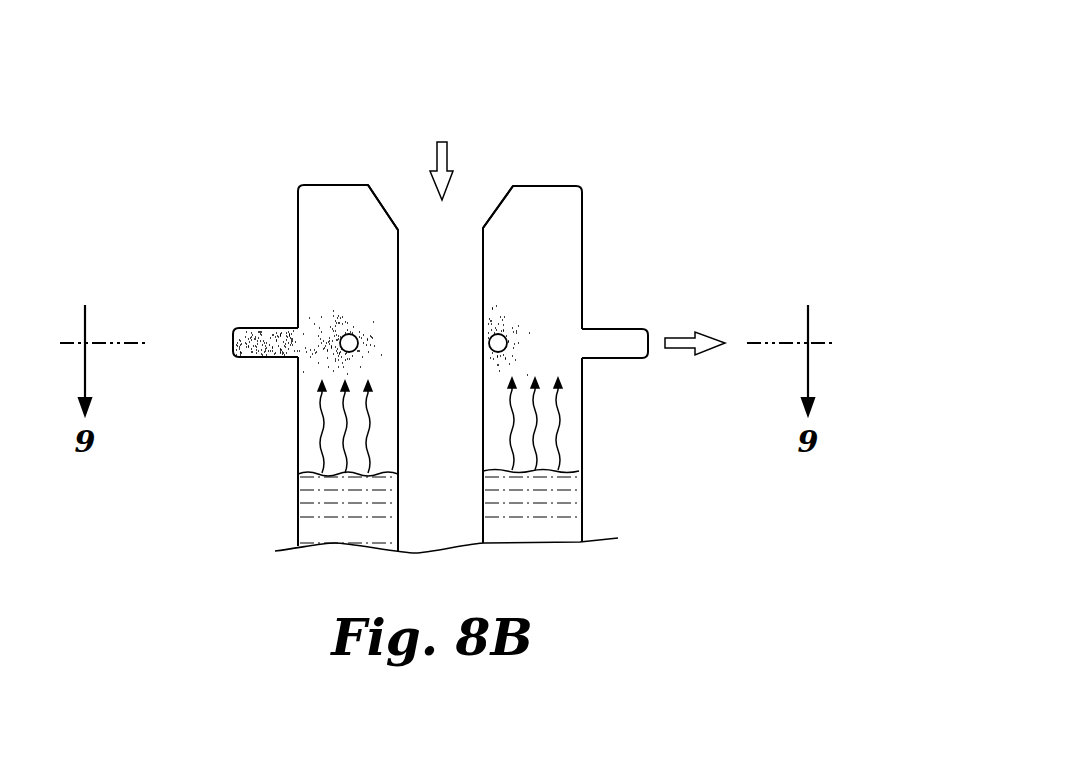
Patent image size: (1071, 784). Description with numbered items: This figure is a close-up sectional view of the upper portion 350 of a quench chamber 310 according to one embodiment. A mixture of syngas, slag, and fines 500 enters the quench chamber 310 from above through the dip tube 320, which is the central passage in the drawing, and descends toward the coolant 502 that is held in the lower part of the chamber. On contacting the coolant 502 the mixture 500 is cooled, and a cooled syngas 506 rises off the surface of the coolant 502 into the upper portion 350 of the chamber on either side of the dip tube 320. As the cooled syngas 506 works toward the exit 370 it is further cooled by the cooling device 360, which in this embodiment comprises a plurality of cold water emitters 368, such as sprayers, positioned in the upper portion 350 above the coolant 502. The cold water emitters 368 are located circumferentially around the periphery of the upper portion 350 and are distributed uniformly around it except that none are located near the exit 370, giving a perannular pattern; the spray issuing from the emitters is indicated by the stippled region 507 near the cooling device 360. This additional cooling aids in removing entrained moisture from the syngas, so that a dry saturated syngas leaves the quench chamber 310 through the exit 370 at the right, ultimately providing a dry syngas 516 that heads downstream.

The quench chamber 310 is at (611, 98).
The dip tube 320 is at (380, 197).
The upper portion 350 is at (602, 414).
The cooling device 360 is at (208, 343).
The cold water emitters 368 is at (272, 330).
The exit 370 is at (607, 313).
The mixture of syngas, slag, and fines 500 is at (456, 160).
The coolant 502 is at (563, 488).
The cooled syngas 506 is at (318, 422).
The injected stream 507 is at (307, 362).
The dry syngas 516 is at (695, 322).